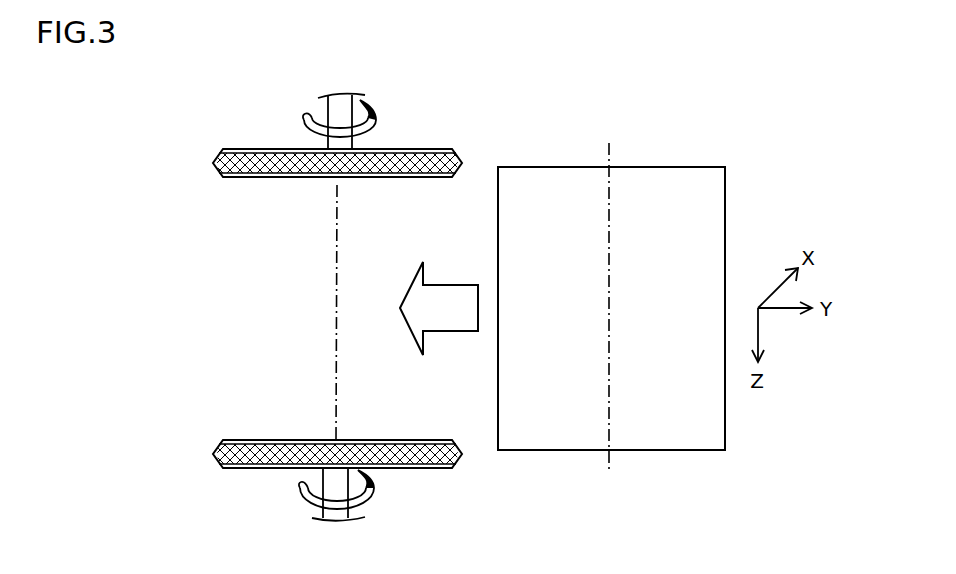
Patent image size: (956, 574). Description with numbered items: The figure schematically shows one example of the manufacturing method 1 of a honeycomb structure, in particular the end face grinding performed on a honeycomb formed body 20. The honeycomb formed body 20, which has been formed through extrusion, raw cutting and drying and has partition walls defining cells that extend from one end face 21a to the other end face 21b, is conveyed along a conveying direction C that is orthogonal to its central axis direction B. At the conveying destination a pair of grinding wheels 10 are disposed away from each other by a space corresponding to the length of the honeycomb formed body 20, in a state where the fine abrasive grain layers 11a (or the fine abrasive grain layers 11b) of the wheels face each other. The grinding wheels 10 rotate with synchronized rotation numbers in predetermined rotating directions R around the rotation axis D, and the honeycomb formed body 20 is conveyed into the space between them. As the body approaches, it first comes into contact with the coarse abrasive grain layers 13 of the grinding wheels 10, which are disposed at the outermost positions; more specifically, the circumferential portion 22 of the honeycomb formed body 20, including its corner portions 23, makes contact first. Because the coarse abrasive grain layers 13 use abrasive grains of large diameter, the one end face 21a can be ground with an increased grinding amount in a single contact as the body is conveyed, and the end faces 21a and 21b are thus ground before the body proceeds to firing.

The manufacturing method of a honeycomb structure 1 is at (184, 108).
The grinding wheel 10 is at (202, 162).
The fine abrasive grain layer 11a is at (235, 177).
The fine abrasive grain layer 11b is at (233, 149).
The coarse abrasive grain layer 13 is at (285, 153).
The rotating direction R is at (376, 122).
The rotation axis D is at (345, 220).
The conveying direction C is at (457, 285).
The honeycomb formed body 20 is at (545, 150).
The one end face 21a is at (667, 167).
The other end face 21b is at (652, 450).
The circumferential portion 22 is at (498, 205).
The corner portion 23 is at (500, 167).
The central axis direction B is at (614, 320).